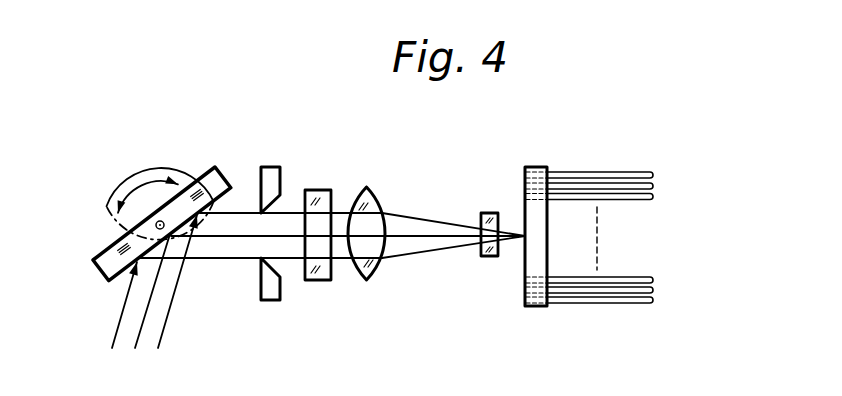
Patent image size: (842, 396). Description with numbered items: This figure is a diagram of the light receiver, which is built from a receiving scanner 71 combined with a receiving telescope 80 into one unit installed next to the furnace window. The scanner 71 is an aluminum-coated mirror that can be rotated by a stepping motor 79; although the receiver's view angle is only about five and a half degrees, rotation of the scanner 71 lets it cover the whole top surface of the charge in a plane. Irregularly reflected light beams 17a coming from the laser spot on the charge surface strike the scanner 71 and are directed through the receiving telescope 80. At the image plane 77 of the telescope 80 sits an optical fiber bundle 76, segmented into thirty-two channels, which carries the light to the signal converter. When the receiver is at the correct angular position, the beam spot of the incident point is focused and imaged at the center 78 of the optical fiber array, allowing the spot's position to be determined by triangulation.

The receiving scanner 71 is at (108, 242).
The stepping motor 79 is at (165, 168).
The irregularly reflected light beams 17a is at (121, 317).
The receiving telescope 80 is at (253, 313).
The center of optical fiber array 78 is at (523, 243).
The image plane 77 is at (537, 167).
The optical fiber bundle 76 is at (593, 172).